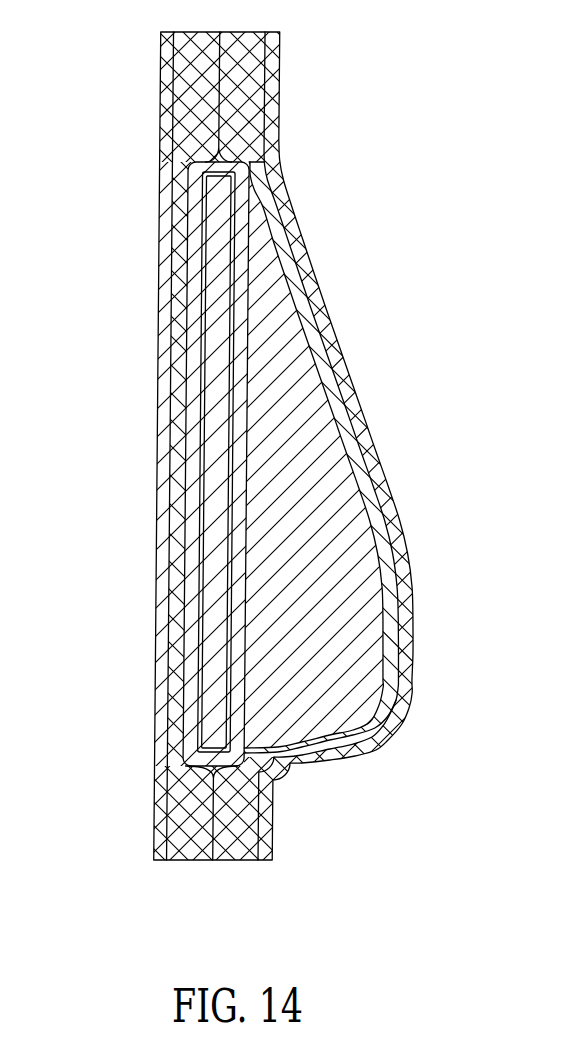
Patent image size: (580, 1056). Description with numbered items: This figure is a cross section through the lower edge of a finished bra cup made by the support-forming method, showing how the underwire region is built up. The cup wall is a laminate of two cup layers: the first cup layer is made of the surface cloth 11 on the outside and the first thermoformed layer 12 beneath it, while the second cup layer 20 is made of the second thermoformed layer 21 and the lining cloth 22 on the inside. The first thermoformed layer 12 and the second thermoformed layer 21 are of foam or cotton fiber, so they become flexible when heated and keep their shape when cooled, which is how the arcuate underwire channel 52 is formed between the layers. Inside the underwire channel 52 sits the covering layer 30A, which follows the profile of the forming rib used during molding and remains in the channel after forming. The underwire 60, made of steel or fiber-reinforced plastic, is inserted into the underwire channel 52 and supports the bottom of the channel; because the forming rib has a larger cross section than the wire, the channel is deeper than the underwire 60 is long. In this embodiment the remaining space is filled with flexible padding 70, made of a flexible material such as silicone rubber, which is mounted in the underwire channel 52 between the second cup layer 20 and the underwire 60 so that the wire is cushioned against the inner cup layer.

The surface cloth 11 is at (162, 127).
The first thermoformed layer 12 is at (192, 57).
The second cup layer 20 is at (412, 613).
The second thermoformed layer 21 is at (338, 393).
The lining cloth 22 is at (336, 330).
The covering layer 30A is at (200, 353).
The underwire channel 52 is at (187, 695).
The underwire 60 is at (206, 496).
The flexible padding 70 is at (337, 523).